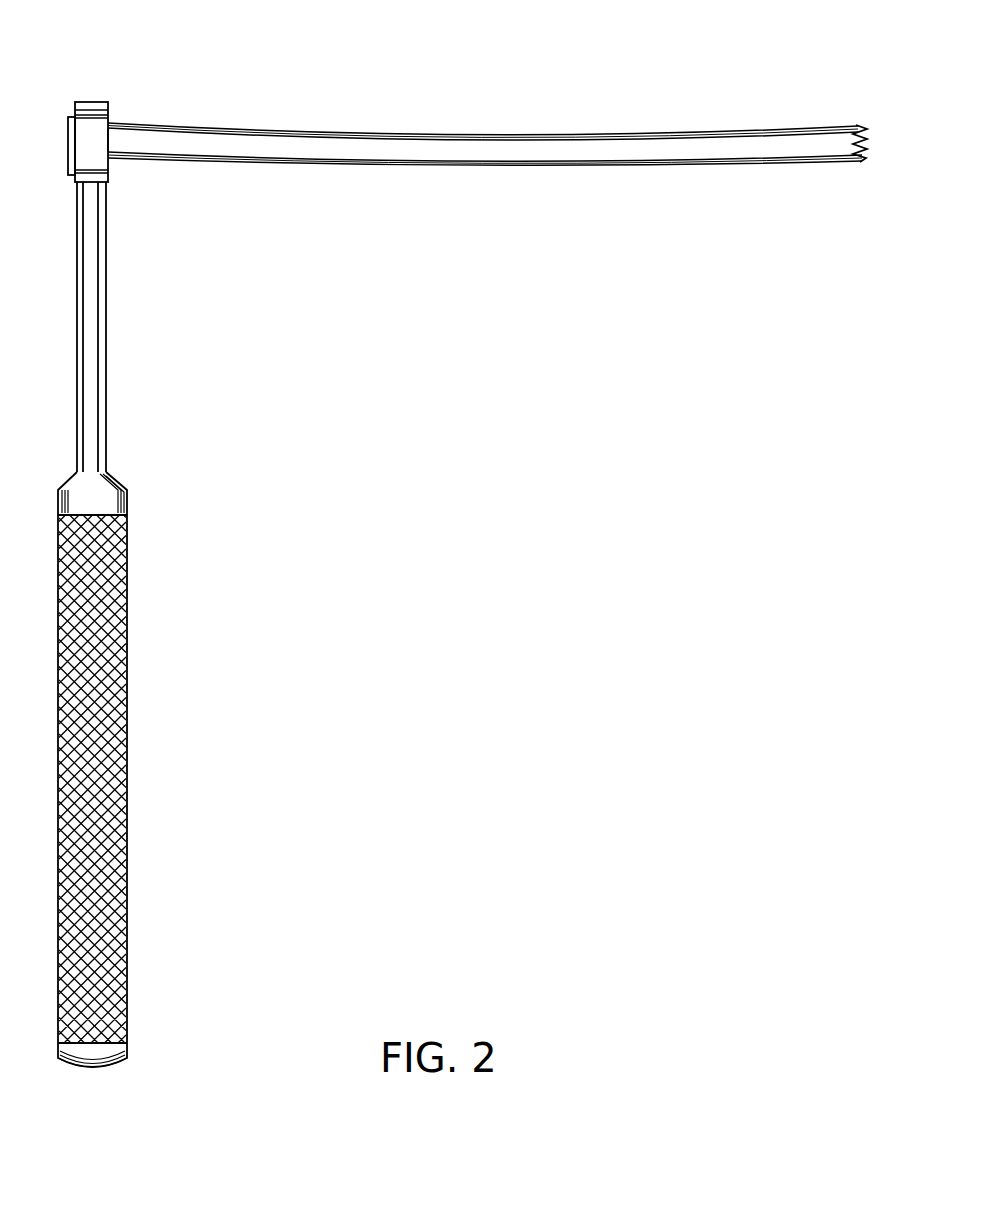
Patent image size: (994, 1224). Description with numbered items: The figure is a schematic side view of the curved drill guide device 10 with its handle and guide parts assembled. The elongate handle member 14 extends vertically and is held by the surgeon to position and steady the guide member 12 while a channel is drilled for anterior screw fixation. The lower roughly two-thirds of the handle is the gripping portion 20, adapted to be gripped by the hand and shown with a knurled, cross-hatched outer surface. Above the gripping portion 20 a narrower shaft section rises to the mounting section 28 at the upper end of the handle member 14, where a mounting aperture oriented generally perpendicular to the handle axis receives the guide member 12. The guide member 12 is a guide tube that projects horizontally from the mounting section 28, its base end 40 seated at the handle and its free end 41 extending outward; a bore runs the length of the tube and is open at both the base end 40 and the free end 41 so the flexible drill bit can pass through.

The drill guide device 10 is at (352, 465).
The guide member 12 is at (338, 148).
The elongate handle member 14 is at (110, 570).
The gripping portion 20 is at (108, 750).
The mounting section 28 is at (88, 105).
The base end 40 is at (110, 141).
The free end 41 is at (863, 146).